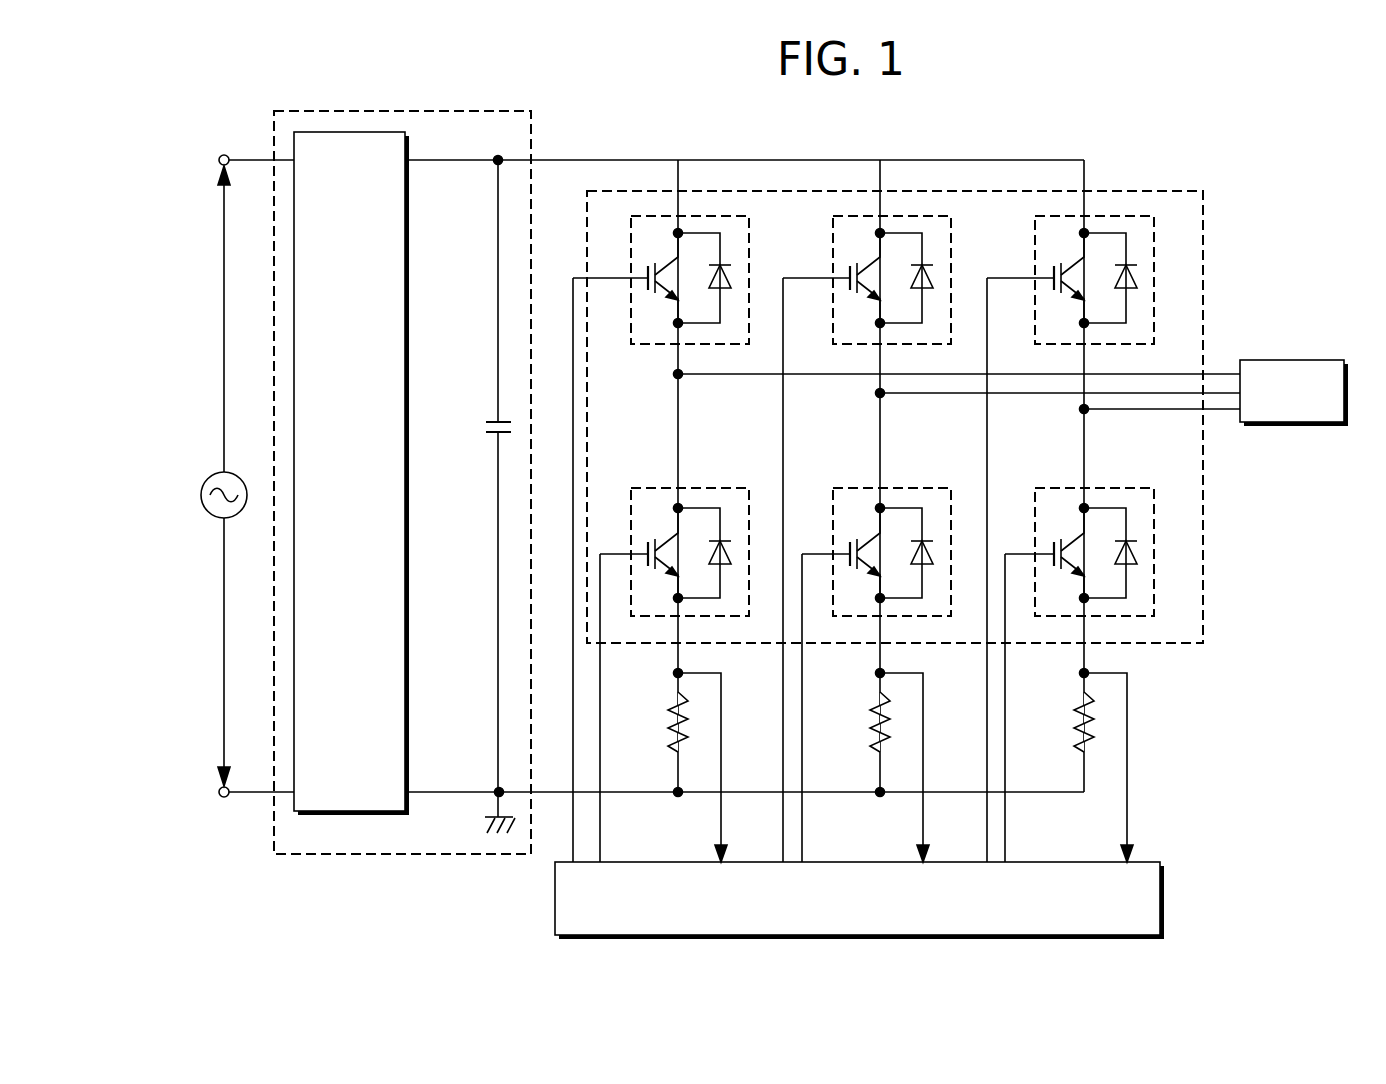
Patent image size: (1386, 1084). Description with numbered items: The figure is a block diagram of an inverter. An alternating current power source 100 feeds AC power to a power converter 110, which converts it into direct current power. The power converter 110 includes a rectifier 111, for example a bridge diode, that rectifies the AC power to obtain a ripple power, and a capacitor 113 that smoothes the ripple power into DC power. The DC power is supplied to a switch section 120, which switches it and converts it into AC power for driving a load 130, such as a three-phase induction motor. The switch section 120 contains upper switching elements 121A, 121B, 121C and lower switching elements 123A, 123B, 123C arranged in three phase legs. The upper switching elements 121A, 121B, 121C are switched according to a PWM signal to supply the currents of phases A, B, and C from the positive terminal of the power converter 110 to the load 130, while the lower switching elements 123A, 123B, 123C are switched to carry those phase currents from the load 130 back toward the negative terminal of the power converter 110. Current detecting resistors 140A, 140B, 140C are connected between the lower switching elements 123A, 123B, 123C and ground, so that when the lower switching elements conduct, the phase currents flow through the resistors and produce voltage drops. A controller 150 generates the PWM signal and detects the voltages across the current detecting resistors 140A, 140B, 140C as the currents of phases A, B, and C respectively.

The alternating current power source 100 is at (209, 476).
The power converter 110 is at (357, 855).
The rectifier 111 is at (406, 273).
The capacitor 113 is at (486, 433).
The switch section 120 is at (1204, 208).
The upper switching element 121A is at (661, 345).
The upper switching element 121B is at (832, 270).
The upper switching element 121C is at (1034, 270).
The lower switching element 123A is at (709, 487).
The lower switching element 123B is at (911, 487).
The lower switching element 123C is at (1114, 487).
The load 130 is at (1313, 361).
The current detecting resistor 140A is at (650, 722).
The current detecting resistor 140B is at (852, 722).
The current detecting resistor 140C is at (1054, 722).
The controller 150 is at (1161, 876).